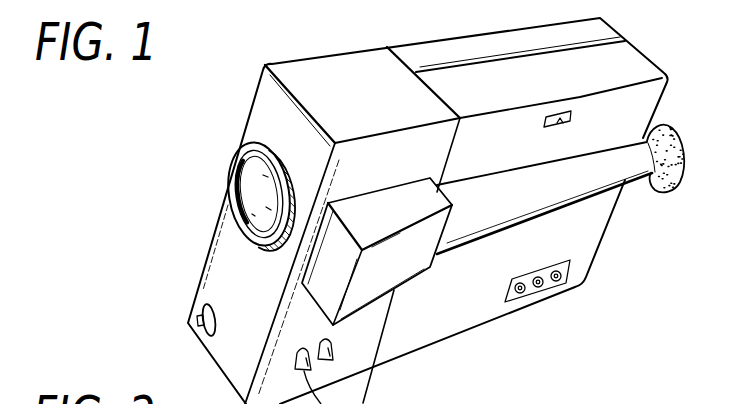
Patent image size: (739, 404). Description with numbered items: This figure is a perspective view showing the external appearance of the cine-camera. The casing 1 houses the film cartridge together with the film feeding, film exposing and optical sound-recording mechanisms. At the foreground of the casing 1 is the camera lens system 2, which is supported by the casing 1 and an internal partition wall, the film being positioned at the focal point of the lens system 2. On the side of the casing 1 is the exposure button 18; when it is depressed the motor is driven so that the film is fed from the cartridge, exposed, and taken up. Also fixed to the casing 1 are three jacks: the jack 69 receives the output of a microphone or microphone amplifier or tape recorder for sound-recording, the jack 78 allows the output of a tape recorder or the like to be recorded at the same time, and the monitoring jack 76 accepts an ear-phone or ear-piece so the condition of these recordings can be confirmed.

The casing 1 is at (363, 355).
The camera lens system 2 is at (242, 197).
The exposure button 18 is at (198, 322).
The jack 69 is at (561, 281).
The monitoring jack 76 is at (522, 293).
The jack 78 is at (543, 288).